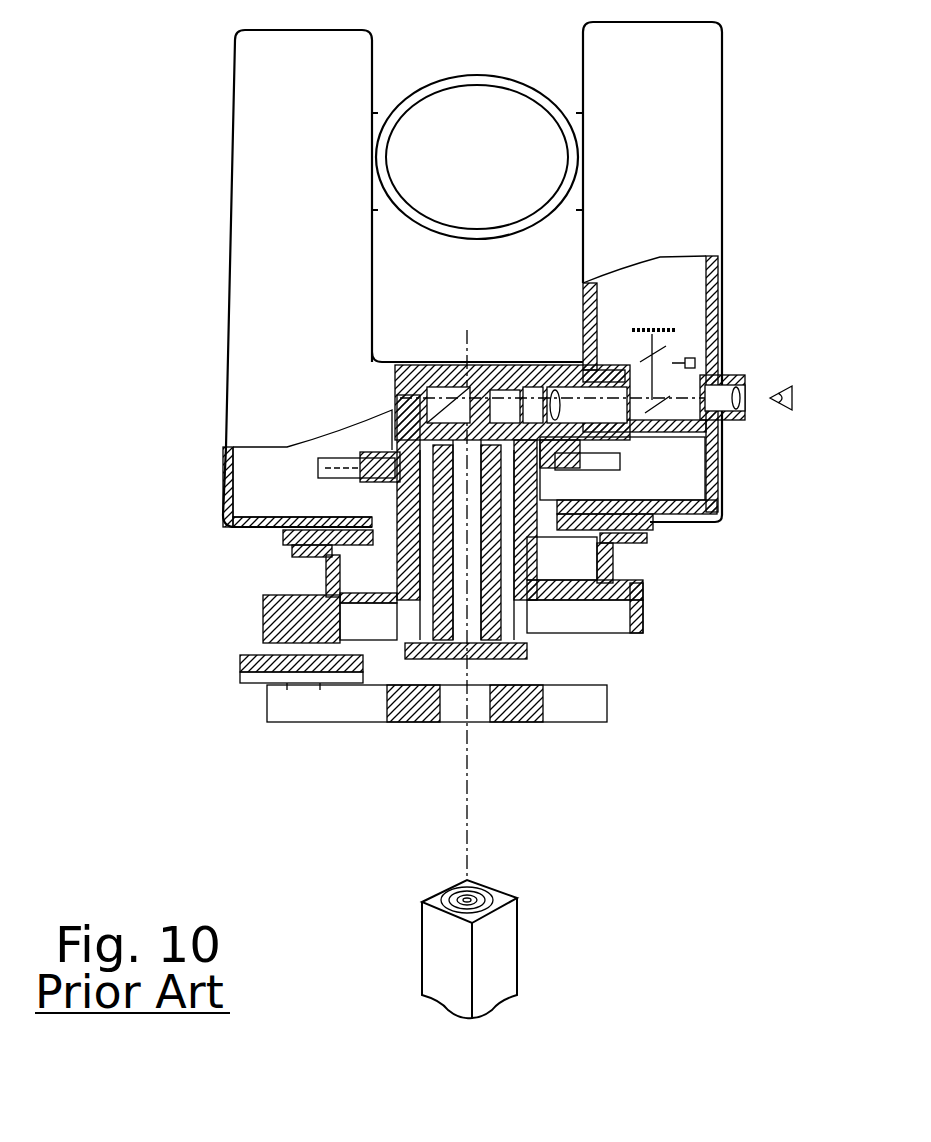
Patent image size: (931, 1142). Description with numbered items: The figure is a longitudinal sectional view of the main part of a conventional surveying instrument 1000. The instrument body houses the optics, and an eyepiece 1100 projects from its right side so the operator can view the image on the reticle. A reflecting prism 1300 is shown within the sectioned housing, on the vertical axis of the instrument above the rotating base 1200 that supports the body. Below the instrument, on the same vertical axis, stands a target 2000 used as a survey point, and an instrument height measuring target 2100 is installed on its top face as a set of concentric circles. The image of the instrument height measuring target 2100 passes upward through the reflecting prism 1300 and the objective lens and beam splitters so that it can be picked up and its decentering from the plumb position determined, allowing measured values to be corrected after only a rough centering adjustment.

The surveying instrument (total station) 1000 is at (212, 407).
The eyepiece 1100 is at (744, 372).
The rotating base 1200 is at (477, 663).
The reflecting prism 1300 is at (455, 365).
The target 2000 is at (532, 958).
The instrument height measuring target 2100 is at (497, 888).